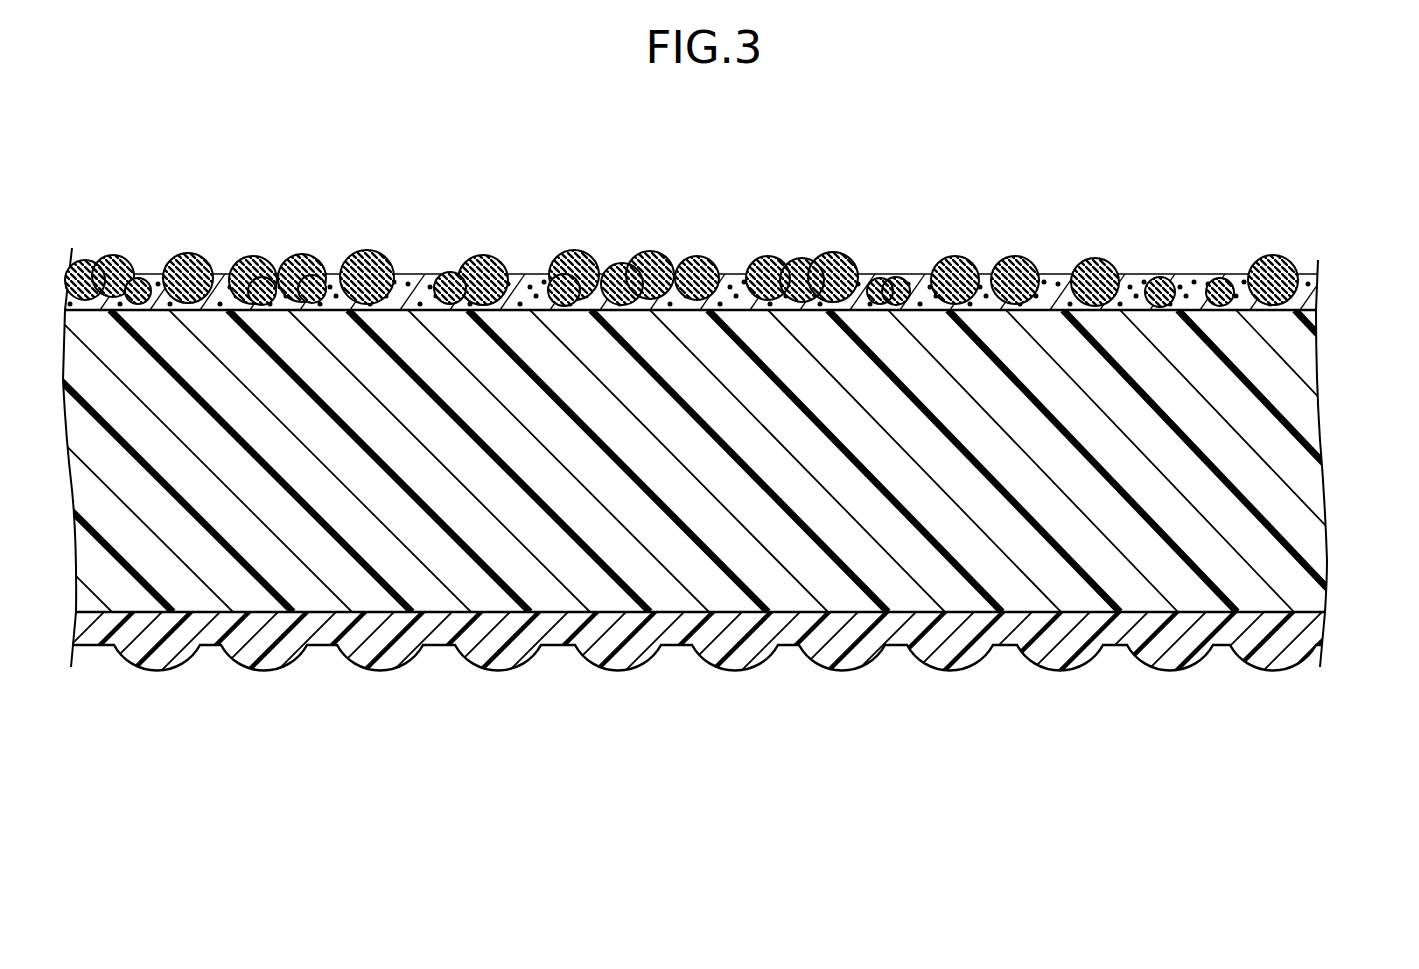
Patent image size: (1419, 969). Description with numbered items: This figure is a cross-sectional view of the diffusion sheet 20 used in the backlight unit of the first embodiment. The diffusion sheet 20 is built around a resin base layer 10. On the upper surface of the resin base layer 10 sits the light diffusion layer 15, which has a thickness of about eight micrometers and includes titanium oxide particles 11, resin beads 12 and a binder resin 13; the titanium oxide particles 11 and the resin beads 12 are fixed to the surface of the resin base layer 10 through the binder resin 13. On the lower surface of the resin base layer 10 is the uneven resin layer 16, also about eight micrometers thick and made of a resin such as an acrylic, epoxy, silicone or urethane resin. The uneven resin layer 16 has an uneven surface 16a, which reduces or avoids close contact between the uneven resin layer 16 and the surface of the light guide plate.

The diffusion sheet 20 is at (134, 188).
The resin base layer 10 is at (1308, 480).
The uneven resin layer 16 is at (706, 677).
The uneven surface 16a is at (1163, 673).
The light diffusion layer 15 is at (691, 210).
The titanium oxide particles 11 is at (1140, 283).
The resin beads 12 is at (1112, 268).
The binder resin 13 is at (1082, 176).